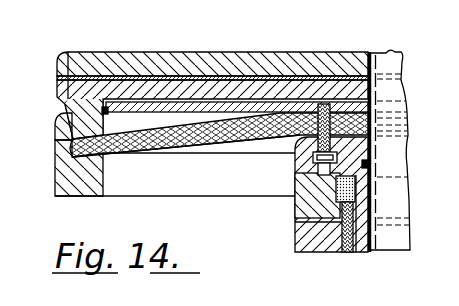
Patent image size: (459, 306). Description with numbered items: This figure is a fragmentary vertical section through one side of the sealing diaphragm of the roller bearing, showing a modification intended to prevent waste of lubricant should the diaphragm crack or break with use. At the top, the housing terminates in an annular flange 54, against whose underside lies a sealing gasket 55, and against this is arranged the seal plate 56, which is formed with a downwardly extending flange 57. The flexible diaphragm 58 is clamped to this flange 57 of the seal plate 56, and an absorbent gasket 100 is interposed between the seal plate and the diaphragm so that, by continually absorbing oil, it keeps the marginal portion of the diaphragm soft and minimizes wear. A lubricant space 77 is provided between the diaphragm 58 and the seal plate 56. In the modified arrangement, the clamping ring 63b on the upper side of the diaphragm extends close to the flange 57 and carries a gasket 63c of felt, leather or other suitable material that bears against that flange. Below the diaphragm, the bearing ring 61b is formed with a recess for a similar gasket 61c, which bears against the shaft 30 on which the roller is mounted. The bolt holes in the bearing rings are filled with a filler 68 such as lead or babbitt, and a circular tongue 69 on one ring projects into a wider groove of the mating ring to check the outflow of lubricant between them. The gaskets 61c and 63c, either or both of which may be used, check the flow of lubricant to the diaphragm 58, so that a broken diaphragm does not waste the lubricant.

The shaft 30 is at (395, 240).
The annular flange 54 is at (193, 66).
The sealing gasket 55 is at (125, 76).
The seal plate 56 is at (240, 88).
The flange of seal plate 57 is at (62, 135).
The flexible diaphragm 58 is at (202, 137).
The bearing ring 61b is at (372, 138).
The gasket 61c is at (371, 165).
The clamping ring 63b is at (312, 108).
The gasket 63c is at (102, 111).
The filler 68 is at (337, 190).
The circular tongue 69 is at (320, 170).
The lubricant space 77 is at (140, 127).
The gasket 100 is at (58, 147).